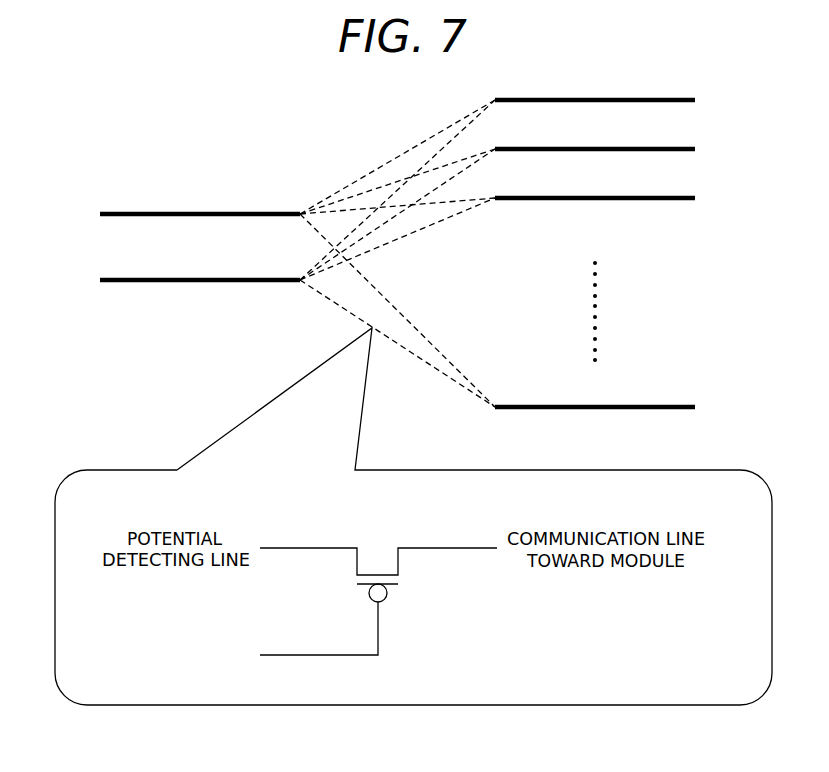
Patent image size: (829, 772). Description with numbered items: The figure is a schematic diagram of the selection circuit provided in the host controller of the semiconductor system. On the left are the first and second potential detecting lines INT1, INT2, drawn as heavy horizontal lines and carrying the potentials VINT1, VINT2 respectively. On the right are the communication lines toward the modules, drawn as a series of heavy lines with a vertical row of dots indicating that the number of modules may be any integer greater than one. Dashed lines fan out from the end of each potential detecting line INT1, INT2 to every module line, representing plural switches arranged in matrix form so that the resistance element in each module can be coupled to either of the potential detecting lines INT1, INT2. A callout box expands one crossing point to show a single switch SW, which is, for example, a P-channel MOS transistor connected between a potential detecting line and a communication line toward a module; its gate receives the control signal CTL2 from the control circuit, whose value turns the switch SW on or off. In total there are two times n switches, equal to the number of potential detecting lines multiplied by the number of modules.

The first potential detecting line voltage VINT1 is at (166, 194).
The second potential detecting line voltage VINT2 is at (166, 303).
The first potential detecting line INT1 is at (165, 211).
The second potential detecting line INT2 is at (165, 283).
The switch SW is at (380, 555).
The control signal CTL2 is at (290, 634).